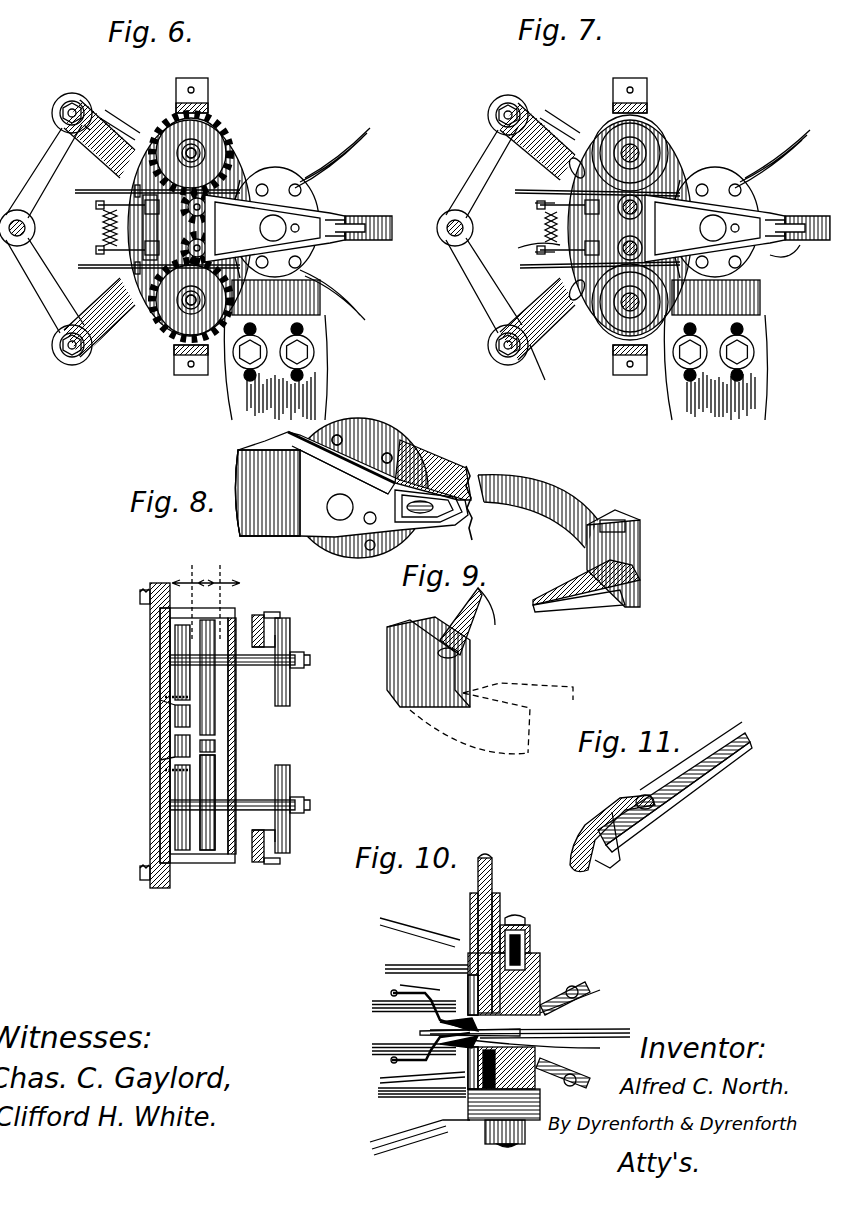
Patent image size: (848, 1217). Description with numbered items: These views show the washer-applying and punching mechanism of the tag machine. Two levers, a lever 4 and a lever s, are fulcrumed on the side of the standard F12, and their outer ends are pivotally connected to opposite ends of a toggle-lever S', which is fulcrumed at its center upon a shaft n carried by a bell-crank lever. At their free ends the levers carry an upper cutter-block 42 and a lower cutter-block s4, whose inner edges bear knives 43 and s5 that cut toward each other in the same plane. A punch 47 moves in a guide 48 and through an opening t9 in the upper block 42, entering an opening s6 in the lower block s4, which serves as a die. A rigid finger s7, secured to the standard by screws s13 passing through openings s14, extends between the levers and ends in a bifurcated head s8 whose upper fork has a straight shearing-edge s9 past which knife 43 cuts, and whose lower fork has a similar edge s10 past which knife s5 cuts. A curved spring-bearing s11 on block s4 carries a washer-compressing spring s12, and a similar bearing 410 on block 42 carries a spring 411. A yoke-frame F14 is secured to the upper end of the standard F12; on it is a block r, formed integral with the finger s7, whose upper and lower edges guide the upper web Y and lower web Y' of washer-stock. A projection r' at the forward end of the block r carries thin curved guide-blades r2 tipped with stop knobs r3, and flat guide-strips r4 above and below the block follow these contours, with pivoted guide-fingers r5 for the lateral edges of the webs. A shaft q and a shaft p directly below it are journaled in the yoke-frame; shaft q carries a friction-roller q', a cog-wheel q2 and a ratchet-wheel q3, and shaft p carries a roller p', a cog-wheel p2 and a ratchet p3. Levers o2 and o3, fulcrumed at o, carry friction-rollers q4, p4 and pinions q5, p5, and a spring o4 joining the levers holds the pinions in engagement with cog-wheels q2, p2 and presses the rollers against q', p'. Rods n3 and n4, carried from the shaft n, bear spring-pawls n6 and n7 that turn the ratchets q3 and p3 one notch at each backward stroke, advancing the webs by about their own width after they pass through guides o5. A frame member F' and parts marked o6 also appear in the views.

In FIG. 6, the yoke-frame F14 is at (210, 85).
In FIG. 7, the yoke-frame F14 is at (640, 90).
In FIG. 8, the yoke-frame F14 is at (236, 735).
In FIG. 6, the standard F12 is at (318, 400).
In FIG. 7, the standard F12 is at (668, 407).
In FIG. 6, the frame plate F' is at (271, 190).
In FIG. 7, the frame plate F' is at (711, 193).
In FIG. 8, the frame plate F' is at (173, 735).
In FIG. 6, the shaft q is at (206, 153).
In FIG. 7, the shaft q is at (635, 146).
In FIG. 8, the shaft q is at (240, 648).
In FIG. 7, the friction-roller q' is at (647, 153).
In FIG. 8, the friction-roller q' is at (157, 662).
In FIG. 6, the cog-wheel q2 is at (195, 148).
In FIG. 8, the cog-wheel q2 is at (210, 630).
In FIG. 8, the ratchet-wheel q3 is at (290, 630).
In FIG. 7, the friction-roller q4 is at (642, 210).
In FIG. 8, the friction-roller q4 is at (176, 715).
In FIG. 6, the pinion q5 is at (205, 212).
In FIG. 8, the pinion q5 is at (215, 715).
In FIG. 6, the shaft p is at (185, 311).
In FIG. 7, the shaft p is at (624, 316).
In FIG. 8, the shaft p is at (240, 793).
In FIG. 7, the roller p' is at (607, 317).
In FIG. 8, the roller p' is at (150, 807).
In FIG. 6, the cog-wheel p2 is at (170, 315).
In FIG. 8, the cog-wheel p2 is at (210, 850).
In FIG. 8, the ratchet p3 is at (290, 772).
In FIG. 7, the friction-roller p4 is at (642, 248).
In FIG. 8, the friction-roller p4 is at (176, 745).
In FIG. 6, the pinion p5 is at (205, 250).
In FIG. 8, the pinion p5 is at (215, 742).
In FIG. 7, the fulcrum o is at (568, 227).
In FIG. 7, the lever o2 is at (533, 207).
In FIG. 8, the lever o2 is at (160, 700).
In FIG. 7, the lever o3 is at (524, 240).
In FIG. 8, the lever o3 is at (160, 760).
In FIG. 6, the spring o4 is at (118, 227).
In FIG. 7, the spring o4 is at (535, 235).
In FIG. 6, the guide o5 is at (93, 229).
In FIG. 7, the guide o5 is at (531, 230).
In FIG. 7, the pin o6 is at (570, 175).
In FIG. 6, the upper web Y is at (157, 178).
In FIG. 7, the upper web Y is at (587, 202).
In FIG. 8, the upper web Y is at (159, 687).
In FIG. 6, the lower web Y' is at (159, 275).
In FIG. 7, the lower web Y' is at (589, 258).
In FIG. 8, the lower web Y' is at (147, 778).
In FIG. 6, the toggle-lever S' is at (43, 229).
In FIG. 7, the toggle-lever S' is at (479, 230).
In FIG. 6, the shaft n is at (35, 228).
In FIG. 7, the shaft n is at (437, 230).
In FIG. 8, the rod n3 is at (256, 630).
In FIG. 8, the rod n4 is at (255, 846).
In FIG. 8, the spring-pawl n6 is at (272, 612).
In FIG. 8, the spring-pawl n7 is at (270, 864).
In FIG. 6, the lever 4 is at (108, 120).
In FIG. 7, the lever 4 is at (546, 120).
In FIG. 10, the lever 4 is at (412, 930).
In FIG. 10, the cutter-block 42 is at (540, 985).
In FIG. 10, the knife 43 is at (420, 979).
In FIG. 10, the punch 47 is at (492, 875).
In FIG. 10, the guide 48 is at (470, 905).
In FIG. 10, the bearing 410 is at (585, 985).
In FIG. 10, the washer-compressing spring 411 is at (580, 1001).
In FIG. 6, the block r is at (275, 228).
In FIG. 7, the block r is at (715, 228).
In FIG. 9, the block r is at (250, 489).
In FIG. 7, the projection r' is at (779, 265).
In FIG. 9, the projection r' is at (353, 503).
In FIG. 10, the guide-blade r2 is at (411, 1017).
In FIG. 10, the knob or stop r3 is at (414, 1036).
In FIG. 7, the guide-strip r4 is at (790, 190).
In FIG. 11, the guide-strip r4 is at (680, 800).
In FIG. 10, the guide-finger r5 is at (418, 1030).
In FIG. 11, the guide-finger r5 is at (600, 820).
In FIG. 6, the lever s is at (90, 355).
In FIG. 7, the lever s is at (533, 370).
In FIG. 10, the lever s is at (455, 1121).
In FIG. 10, the cutter-block s4 is at (520, 1080).
In FIG. 10, the knife s5 is at (422, 1074).
In FIG. 10, the opening s6 is at (490, 1090).
In FIG. 6, the finger s7 is at (380, 226).
In FIG. 9, the finger s7 is at (540, 490).
In FIG. 9, the bifurcated head s8 is at (642, 560).
In FIG. 10, the bifurcated head s8 is at (467, 1025).
In FIG. 9, the shearing-edge s9 is at (555, 583).
In FIG. 10, the shearing-edge s9 is at (452, 1012).
In FIG. 9, the shearing-edge s10 is at (575, 620).
In FIG. 10, the shearing-edge s10 is at (452, 1050).
In FIG. 10, the spring-bearing s11 is at (590, 1085).
In FIG. 10, the washer-compressing spring s12 is at (543, 1047).
In FIG. 6, the screw s13 is at (262, 184).
In FIG. 7, the screw s13 is at (718, 160).
In FIG. 9, the opening s14 is at (390, 452).
In FIG. 10, the opening t9 is at (530, 1025).